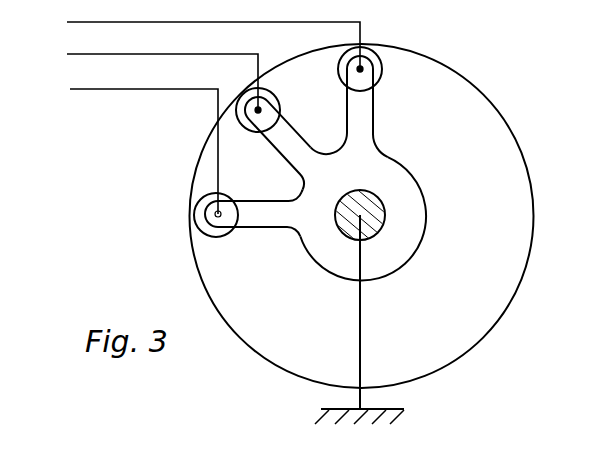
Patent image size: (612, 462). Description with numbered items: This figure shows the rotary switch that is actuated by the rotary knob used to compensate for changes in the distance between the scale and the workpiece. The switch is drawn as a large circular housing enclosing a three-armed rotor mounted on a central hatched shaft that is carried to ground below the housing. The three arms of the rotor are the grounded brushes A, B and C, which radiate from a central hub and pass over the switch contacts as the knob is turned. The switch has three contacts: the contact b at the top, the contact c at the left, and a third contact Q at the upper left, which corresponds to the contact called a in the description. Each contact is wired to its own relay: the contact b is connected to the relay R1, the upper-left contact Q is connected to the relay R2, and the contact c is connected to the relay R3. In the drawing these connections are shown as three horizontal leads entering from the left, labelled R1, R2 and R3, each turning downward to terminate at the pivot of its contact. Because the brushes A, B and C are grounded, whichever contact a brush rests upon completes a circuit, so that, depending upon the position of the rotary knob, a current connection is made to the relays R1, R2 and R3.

The relay R1 is at (200, 39).
The relay R2 is at (149, 77).
The relay R3 is at (132, 146).
The brush A is at (363, 115).
The brush B is at (292, 138).
The brush C is at (250, 210).
The contact b is at (369, 57).
The pivot contact Q is at (251, 97).
The contact c is at (200, 228).